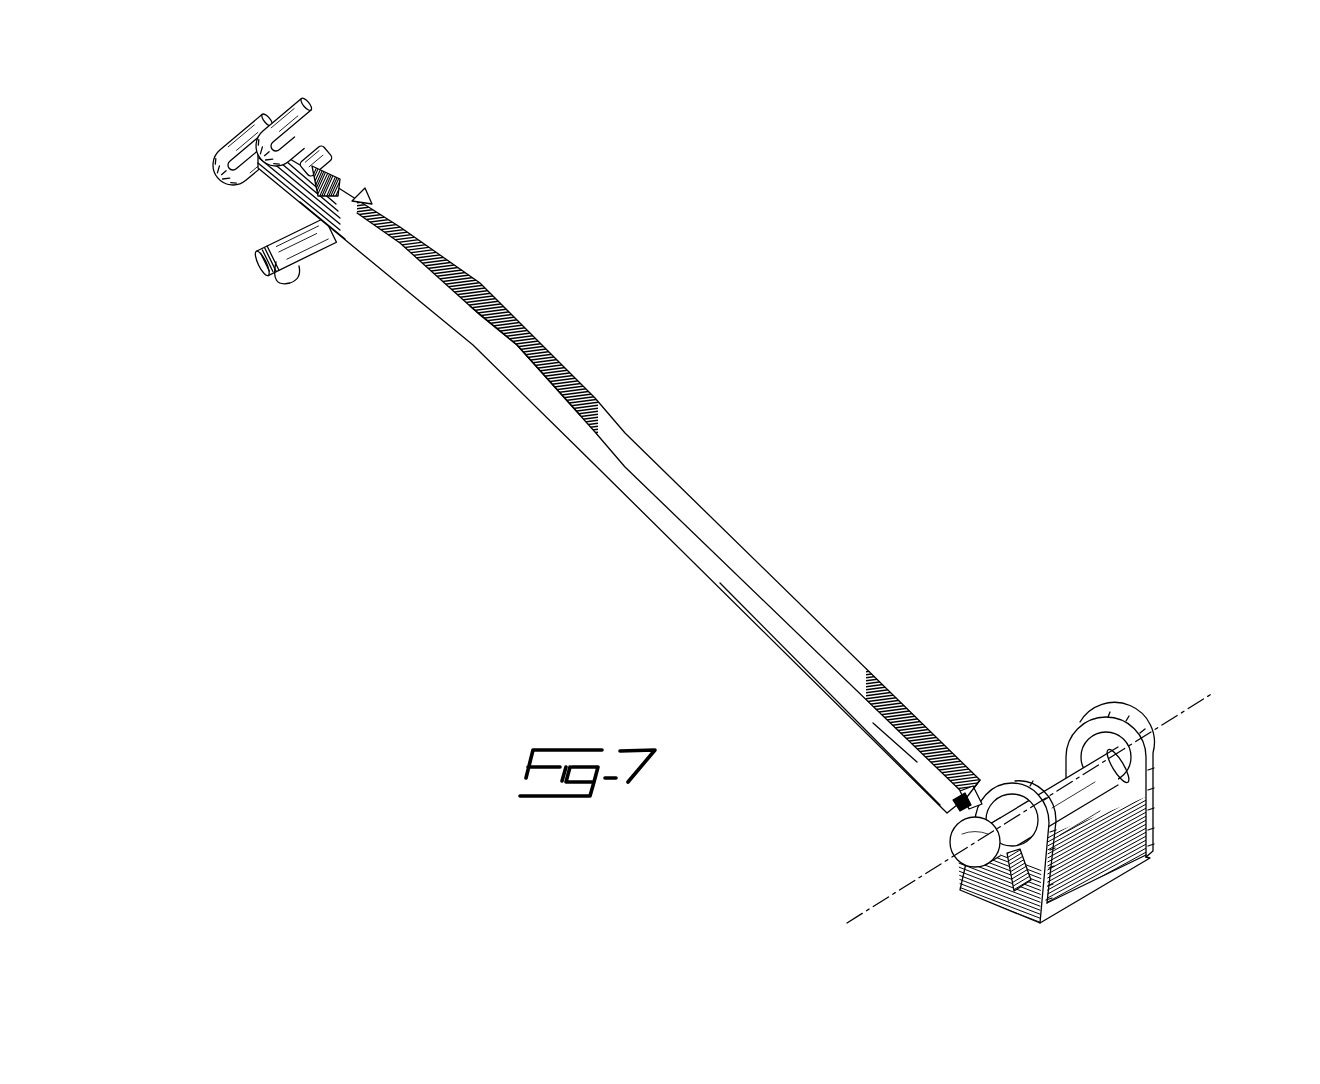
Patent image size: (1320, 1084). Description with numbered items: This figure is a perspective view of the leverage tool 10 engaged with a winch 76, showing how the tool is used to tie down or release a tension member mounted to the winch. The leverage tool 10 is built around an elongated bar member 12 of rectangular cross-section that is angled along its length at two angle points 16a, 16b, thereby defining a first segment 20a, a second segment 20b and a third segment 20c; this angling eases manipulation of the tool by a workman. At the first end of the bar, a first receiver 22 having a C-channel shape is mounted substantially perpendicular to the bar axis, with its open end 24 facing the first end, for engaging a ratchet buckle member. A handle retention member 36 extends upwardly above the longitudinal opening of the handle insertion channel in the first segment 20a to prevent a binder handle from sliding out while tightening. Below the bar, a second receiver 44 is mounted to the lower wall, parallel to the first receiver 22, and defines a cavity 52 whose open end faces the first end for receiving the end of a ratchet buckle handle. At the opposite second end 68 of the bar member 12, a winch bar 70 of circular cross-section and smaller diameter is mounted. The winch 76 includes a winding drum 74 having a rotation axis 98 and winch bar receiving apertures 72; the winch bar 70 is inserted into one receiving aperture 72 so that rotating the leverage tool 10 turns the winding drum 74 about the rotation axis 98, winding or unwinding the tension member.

The leverage tool 10 is at (737, 419).
The bar member 12 is at (632, 430).
The angle point 16a is at (323, 232).
The angle point 16b is at (480, 284).
The first segment 20a is at (270, 192).
The second segment 20b is at (384, 228).
The third segment 20c is at (735, 550).
The first receiver 22 is at (300, 112).
The open end 24 is at (216, 142).
The handle retention member 36 is at (330, 156).
The second receiver 44 is at (262, 254).
The cavity 52 is at (278, 219).
The second end 68 is at (978, 792).
The winch bar 70 is at (978, 852).
The receiving aperture 72 is at (956, 806).
The winding drum 74 is at (1063, 760).
The winch 76 is at (1210, 757).
The rotation axis 98 is at (858, 910).